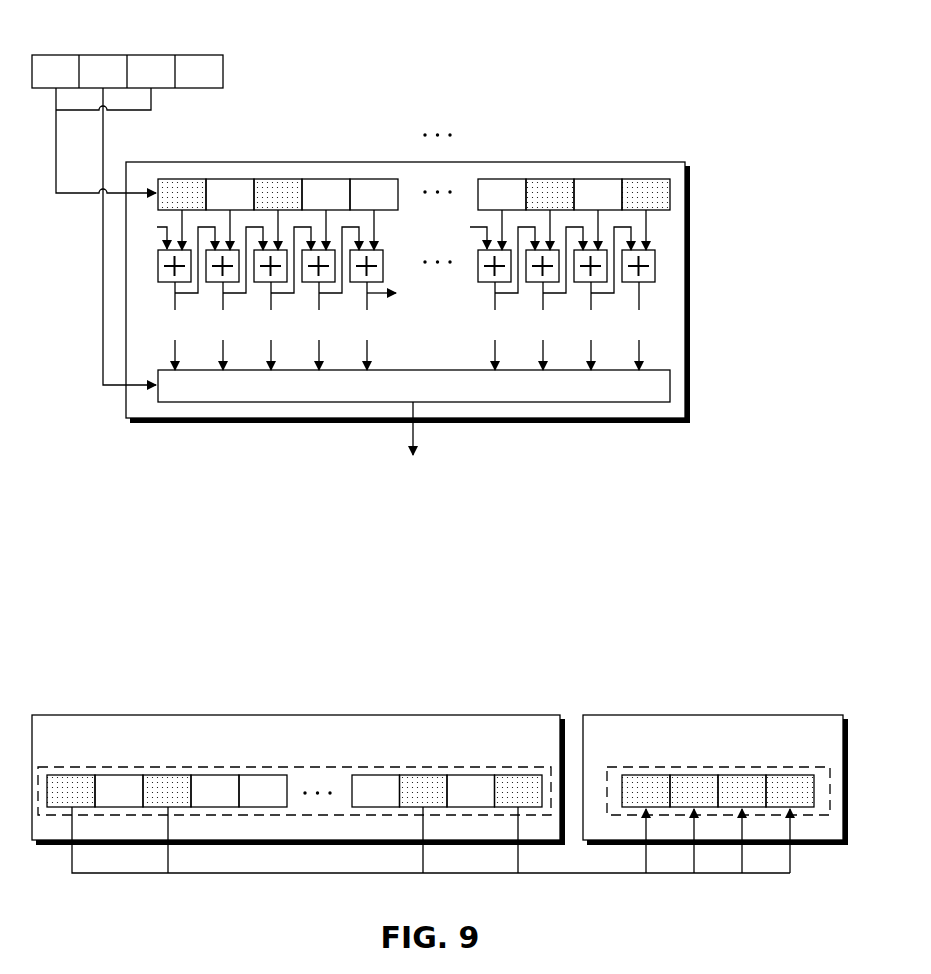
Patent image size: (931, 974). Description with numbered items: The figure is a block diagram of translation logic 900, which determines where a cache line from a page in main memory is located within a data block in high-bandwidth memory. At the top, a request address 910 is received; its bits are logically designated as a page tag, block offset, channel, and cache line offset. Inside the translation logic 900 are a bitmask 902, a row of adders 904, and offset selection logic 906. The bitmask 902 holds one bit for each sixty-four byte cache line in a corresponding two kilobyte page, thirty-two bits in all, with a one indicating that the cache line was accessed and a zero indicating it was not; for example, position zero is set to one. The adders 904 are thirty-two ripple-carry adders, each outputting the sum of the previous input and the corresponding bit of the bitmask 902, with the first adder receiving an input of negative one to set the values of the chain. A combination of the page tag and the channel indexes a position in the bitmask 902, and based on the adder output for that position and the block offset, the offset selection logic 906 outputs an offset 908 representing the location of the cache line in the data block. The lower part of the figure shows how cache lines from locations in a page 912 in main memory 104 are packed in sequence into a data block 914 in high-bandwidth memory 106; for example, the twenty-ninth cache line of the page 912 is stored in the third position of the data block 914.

The translation logic 900 is at (685, 370).
The bitmask 902 is at (670, 192).
The adders 904 is at (655, 255).
The offset selection logic 906 is at (414, 386).
The offset 908 is at (413, 452).
The request address 910 is at (223, 63).
The page 912 is at (105, 767).
The data block 914 is at (605, 773).
The main memory 104 is at (411, 794).
The high-bandwidth memory 106 is at (715, 780).